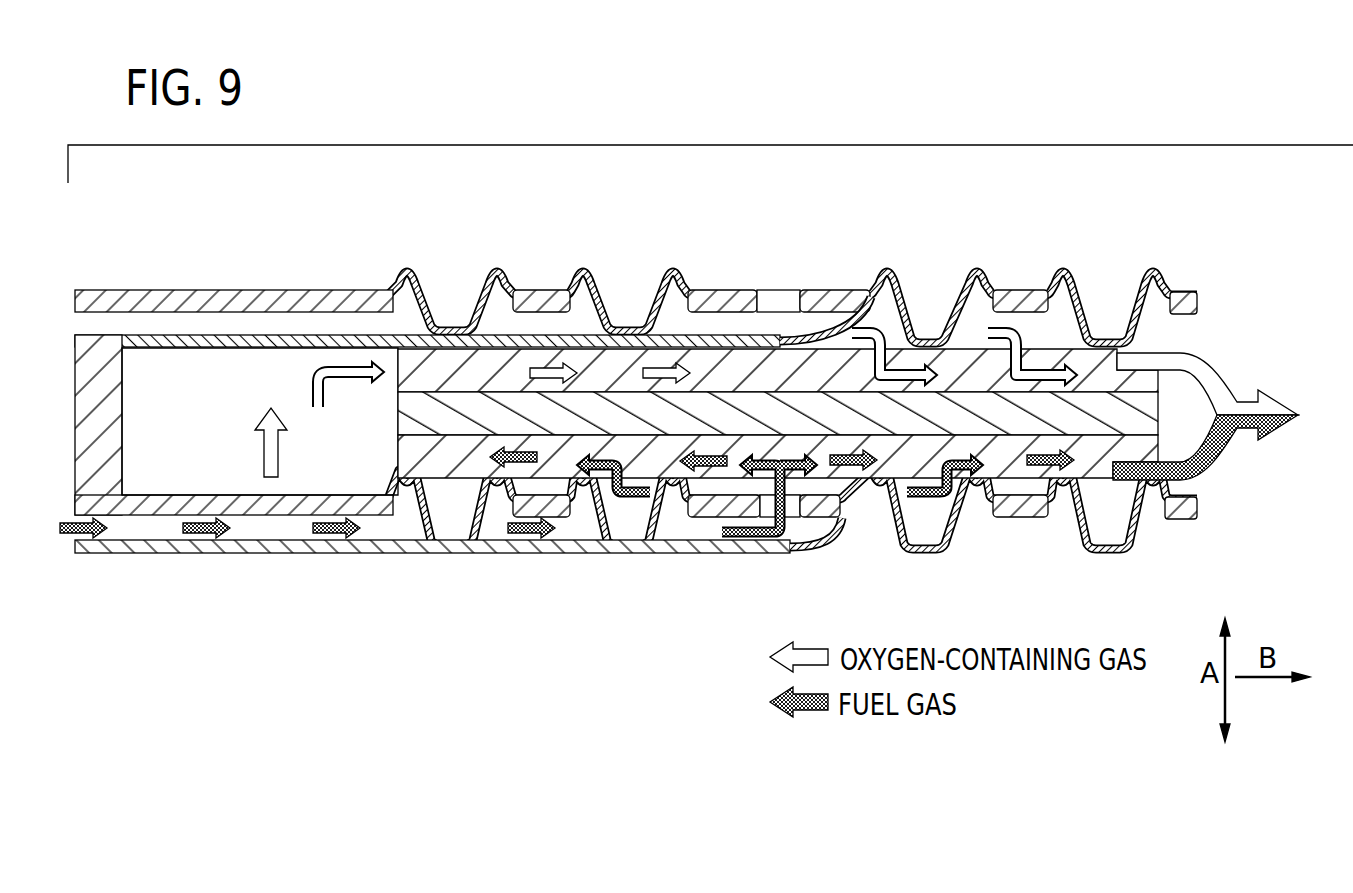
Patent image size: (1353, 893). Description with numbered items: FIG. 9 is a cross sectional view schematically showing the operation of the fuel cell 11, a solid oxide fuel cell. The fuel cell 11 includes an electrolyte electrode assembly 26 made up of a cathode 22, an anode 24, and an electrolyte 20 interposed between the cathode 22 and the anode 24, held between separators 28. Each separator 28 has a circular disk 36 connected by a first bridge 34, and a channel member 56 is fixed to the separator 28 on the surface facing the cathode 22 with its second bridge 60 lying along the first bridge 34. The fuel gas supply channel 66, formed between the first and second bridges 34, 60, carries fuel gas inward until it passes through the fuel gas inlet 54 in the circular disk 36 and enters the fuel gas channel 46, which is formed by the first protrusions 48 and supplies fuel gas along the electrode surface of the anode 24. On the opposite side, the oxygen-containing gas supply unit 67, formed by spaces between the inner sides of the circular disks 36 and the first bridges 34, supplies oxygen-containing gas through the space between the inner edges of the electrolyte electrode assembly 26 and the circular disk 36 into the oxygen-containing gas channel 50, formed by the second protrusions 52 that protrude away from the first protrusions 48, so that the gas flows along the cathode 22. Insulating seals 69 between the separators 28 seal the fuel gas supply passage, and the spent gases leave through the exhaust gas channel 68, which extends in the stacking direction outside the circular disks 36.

The fuel cell 11 is at (413, 195).
The electrolyte 20 is at (1018, 425).
The cathode 22 is at (1033, 390).
The anode 24 is at (1077, 567).
The electrolyte electrode assembly 26 is at (778, 483).
The separator 28 is at (1203, 275).
The first bridge 34 is at (157, 289).
The circular disk 36 is at (1017, 289).
The fuel gas channel 46 is at (856, 518).
The first protrusion 48 is at (580, 273).
The oxygen-containing gas channel 50 is at (898, 340).
The second protrusion 52 is at (992, 289).
The fuel gas inlet 54 is at (813, 552).
The channel member 56 is at (205, 348).
The second bridge 60 is at (168, 344).
The fuel gas supply channel 66 is at (225, 330).
The oxygen-containing gas supply unit 67 is at (177, 460).
The exhaust gas channel 68 is at (1218, 400).
The insulating seal 69 is at (100, 418).